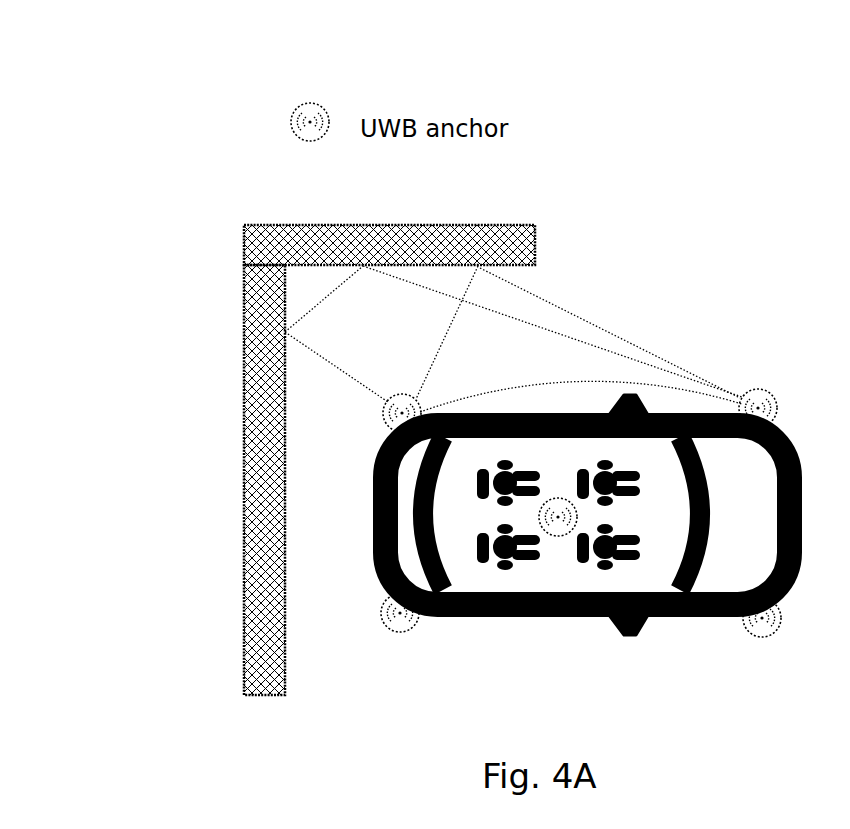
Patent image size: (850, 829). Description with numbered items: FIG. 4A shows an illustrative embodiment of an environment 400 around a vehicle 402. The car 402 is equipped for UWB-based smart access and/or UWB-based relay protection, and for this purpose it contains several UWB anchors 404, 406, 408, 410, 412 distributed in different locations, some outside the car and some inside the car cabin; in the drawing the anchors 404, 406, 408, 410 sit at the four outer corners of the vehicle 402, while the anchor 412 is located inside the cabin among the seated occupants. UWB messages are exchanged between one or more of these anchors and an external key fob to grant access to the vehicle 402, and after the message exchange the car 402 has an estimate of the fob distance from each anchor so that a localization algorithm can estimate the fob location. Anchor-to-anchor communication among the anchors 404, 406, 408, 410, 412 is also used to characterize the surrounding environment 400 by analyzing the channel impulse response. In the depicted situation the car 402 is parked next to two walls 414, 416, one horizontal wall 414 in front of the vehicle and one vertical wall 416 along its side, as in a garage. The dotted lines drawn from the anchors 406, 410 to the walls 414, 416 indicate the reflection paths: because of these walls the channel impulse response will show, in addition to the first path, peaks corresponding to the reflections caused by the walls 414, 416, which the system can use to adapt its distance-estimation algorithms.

The environment 400 is at (681, 192).
The vehicle 402 is at (546, 616).
The UWB anchor 404 is at (386, 622).
The UWB anchor 406 is at (390, 426).
The UWB anchor 408 is at (776, 626).
The UWB anchor 410 is at (771, 420).
The UWB anchor 412 is at (558, 497).
The wall 414 is at (381, 225).
The wall 416 is at (243, 560).